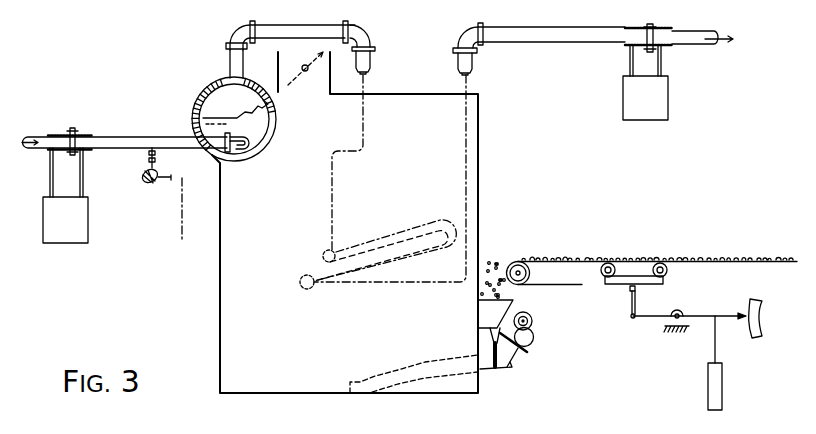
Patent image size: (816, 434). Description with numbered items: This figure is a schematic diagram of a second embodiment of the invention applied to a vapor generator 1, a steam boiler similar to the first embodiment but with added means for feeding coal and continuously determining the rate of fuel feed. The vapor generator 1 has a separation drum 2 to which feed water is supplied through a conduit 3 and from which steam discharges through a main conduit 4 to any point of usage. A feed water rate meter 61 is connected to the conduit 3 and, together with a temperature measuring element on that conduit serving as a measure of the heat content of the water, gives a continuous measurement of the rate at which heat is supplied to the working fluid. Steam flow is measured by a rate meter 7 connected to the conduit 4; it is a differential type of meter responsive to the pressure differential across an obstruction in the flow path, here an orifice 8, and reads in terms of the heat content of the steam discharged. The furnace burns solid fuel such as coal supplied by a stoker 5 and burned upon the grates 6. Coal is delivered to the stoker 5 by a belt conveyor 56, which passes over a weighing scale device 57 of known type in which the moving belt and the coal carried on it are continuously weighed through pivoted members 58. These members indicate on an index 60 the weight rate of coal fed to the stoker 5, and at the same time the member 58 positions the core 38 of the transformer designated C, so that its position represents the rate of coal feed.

The vapor generator 1 is at (324, 332).
The separation drum 2 is at (214, 84).
The conduit 3 is at (117, 150).
The main conduit 4 is at (528, 45).
The stoker 5 is at (517, 363).
The grates 6 is at (402, 370).
The rate meter 7 is at (692, 100).
The orifice 8 is at (668, 42).
The core 38 is at (722, 383).
The belt conveyor 56 is at (705, 261).
The weighing scale device 57 is at (663, 282).
The pivoted members 58 is at (647, 320).
The index 60 is at (762, 303).
The feed water rate meter 61 is at (88, 222).